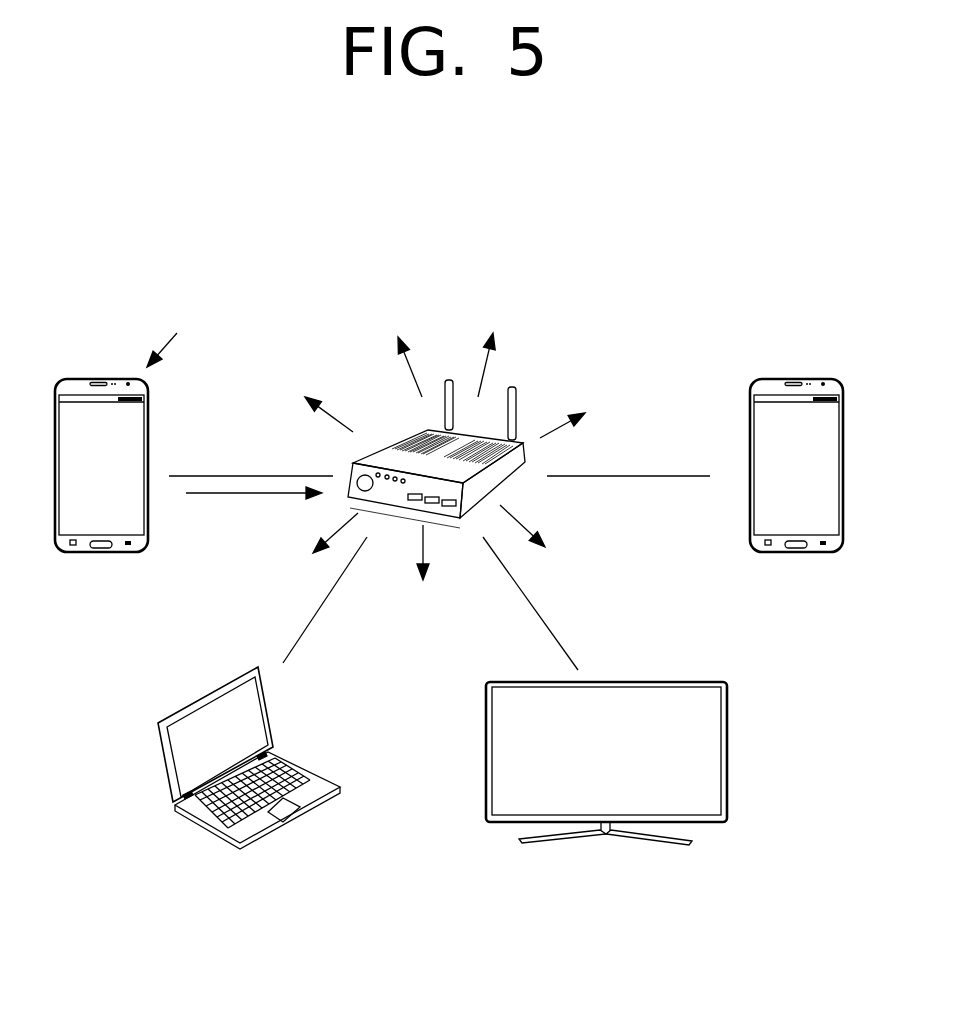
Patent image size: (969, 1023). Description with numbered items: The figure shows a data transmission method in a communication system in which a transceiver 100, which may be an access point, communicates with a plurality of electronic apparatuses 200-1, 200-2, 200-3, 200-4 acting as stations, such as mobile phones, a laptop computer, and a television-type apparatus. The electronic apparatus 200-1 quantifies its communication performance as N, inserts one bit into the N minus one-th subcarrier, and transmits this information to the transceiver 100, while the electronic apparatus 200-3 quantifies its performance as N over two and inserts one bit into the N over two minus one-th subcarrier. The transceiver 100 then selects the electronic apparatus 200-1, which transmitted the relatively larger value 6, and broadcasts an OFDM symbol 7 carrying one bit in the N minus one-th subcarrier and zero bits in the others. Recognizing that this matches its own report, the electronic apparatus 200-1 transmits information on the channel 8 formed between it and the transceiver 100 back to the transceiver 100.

The transceiver 100 is at (400, 448).
The electronic apparatus 200-1 is at (99, 378).
The electronic apparatus 200-2 is at (178, 717).
The electronic apparatus 200-3 is at (727, 722).
The electronic apparatus 200-4 is at (780, 378).
The relatively larger value 6 is at (170, 338).
The OFDM symbol 7 is at (499, 358).
The channel 8 is at (251, 502).